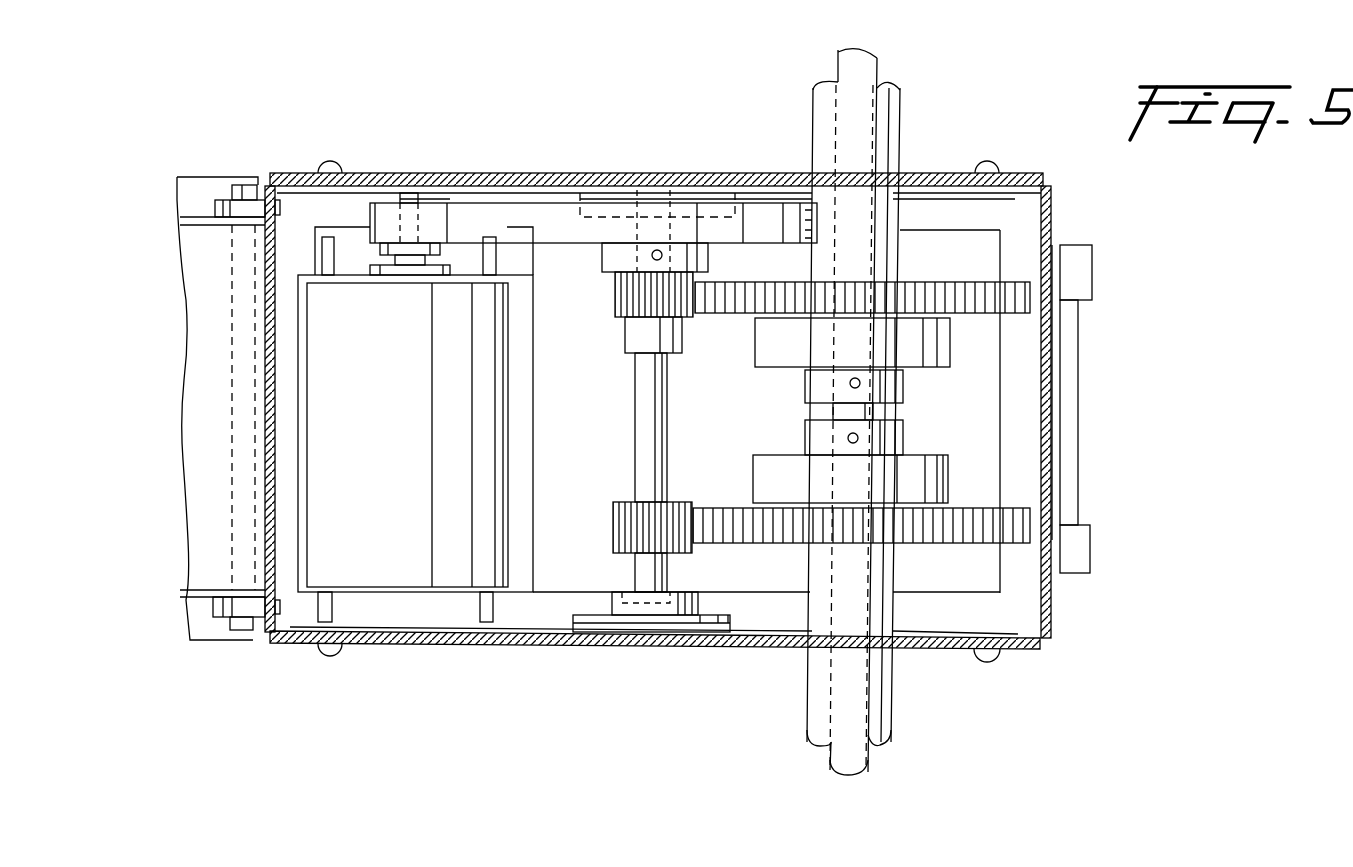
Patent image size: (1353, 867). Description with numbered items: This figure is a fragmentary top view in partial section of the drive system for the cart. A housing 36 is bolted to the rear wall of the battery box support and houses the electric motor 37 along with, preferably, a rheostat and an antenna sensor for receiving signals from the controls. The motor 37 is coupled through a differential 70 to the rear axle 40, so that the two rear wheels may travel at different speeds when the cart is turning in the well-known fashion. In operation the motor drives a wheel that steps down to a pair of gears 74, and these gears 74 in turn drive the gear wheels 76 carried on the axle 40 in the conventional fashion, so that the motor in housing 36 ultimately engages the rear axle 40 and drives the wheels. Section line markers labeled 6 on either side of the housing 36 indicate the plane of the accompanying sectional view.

The housing 36 is at (540, 172).
The motor 37 is at (380, 393).
The rear axle 40 is at (903, 60).
The differential 70 is at (777, 382).
The gears 74 is at (615, 293).
The gear wheels 76 is at (775, 290).
The section line 6- 6 is at (93, 412).